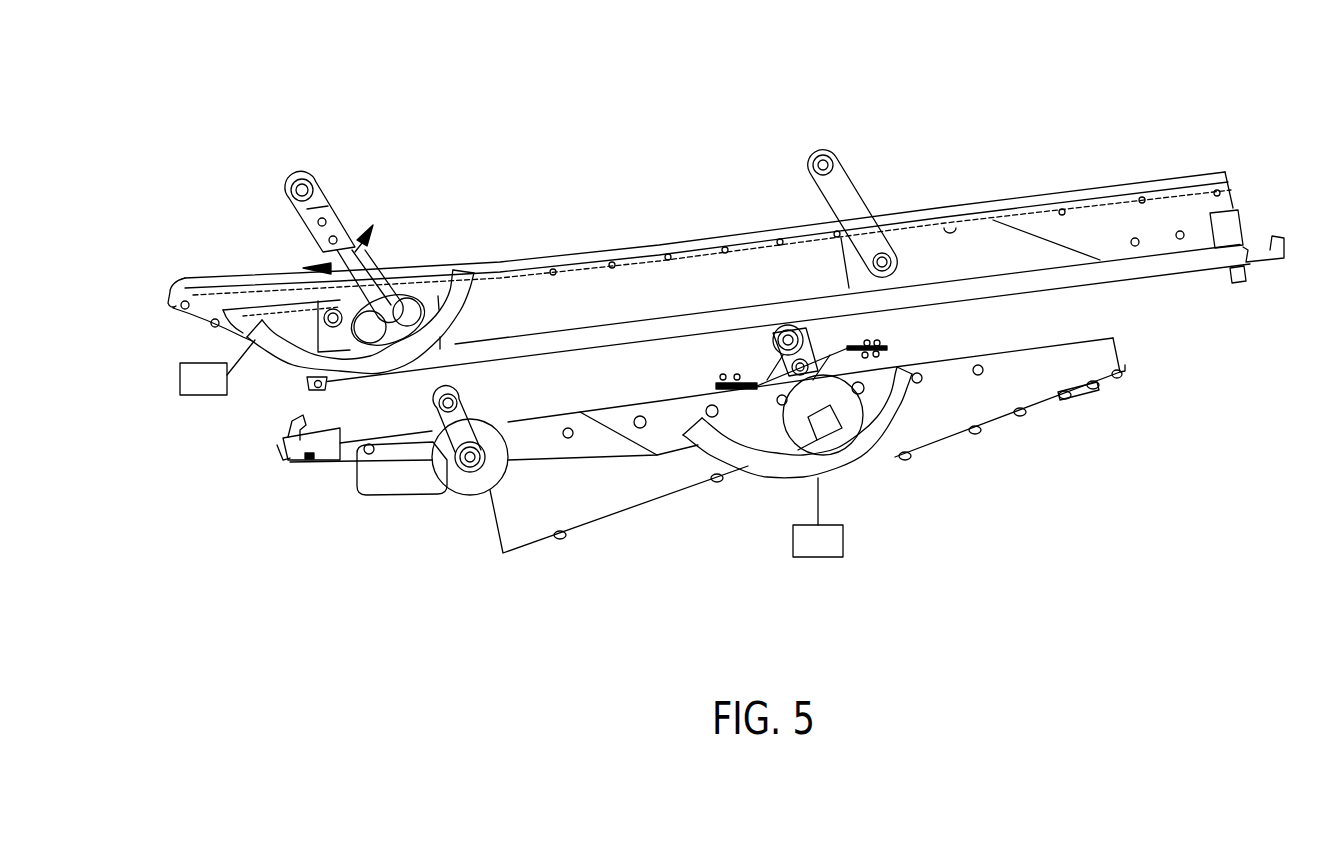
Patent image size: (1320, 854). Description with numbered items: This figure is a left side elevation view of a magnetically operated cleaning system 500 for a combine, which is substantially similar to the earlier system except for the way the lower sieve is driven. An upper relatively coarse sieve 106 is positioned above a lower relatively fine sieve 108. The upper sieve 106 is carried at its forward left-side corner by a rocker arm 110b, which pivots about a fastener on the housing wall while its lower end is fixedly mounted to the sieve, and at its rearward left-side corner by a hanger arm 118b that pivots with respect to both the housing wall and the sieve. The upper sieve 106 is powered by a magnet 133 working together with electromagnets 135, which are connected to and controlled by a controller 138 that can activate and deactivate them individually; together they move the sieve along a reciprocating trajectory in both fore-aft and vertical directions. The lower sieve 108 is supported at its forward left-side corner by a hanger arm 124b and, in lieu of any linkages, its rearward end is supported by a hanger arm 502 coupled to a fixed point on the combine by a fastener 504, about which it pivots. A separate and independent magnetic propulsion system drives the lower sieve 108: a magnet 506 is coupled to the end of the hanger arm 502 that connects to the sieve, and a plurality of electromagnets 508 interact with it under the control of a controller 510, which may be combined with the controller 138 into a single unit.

The magnetically operated cleaning system 500 is at (1172, 127).
The upper relatively coarse sieve 106 is at (1223, 203).
The lower relatively fine sieve 108 is at (1113, 358).
The rocker arm 110b is at (328, 200).
The hanger arm 118b is at (860, 200).
The hanger arm 124b is at (460, 442).
The magnet 133 is at (393, 318).
The electromagnets 135 is at (470, 295).
The controller 138 is at (180, 378).
The hanger arm 502 is at (787, 326).
The fastener 504 is at (778, 337).
The magnet 506 is at (781, 481).
The electromagnets 508 is at (853, 460).
The controller 510 is at (793, 541).